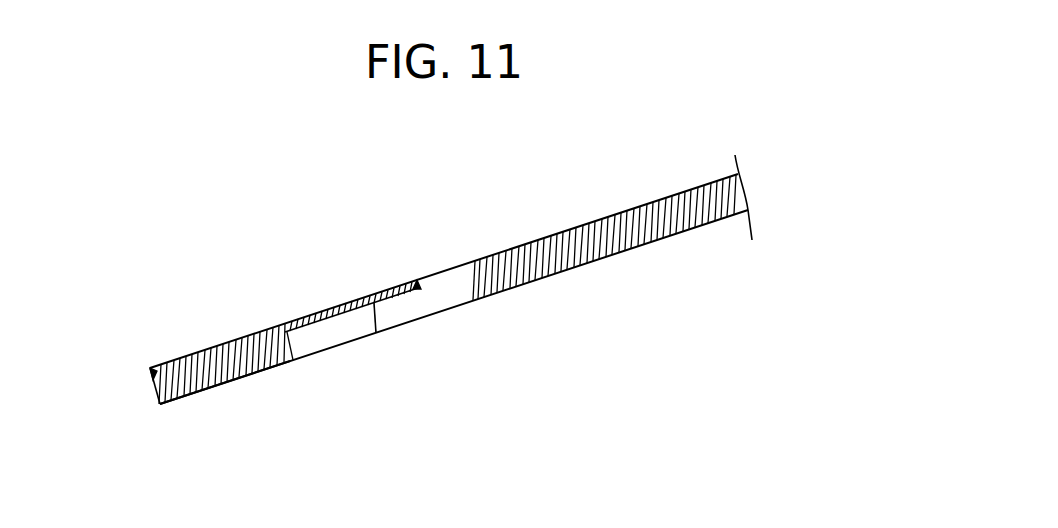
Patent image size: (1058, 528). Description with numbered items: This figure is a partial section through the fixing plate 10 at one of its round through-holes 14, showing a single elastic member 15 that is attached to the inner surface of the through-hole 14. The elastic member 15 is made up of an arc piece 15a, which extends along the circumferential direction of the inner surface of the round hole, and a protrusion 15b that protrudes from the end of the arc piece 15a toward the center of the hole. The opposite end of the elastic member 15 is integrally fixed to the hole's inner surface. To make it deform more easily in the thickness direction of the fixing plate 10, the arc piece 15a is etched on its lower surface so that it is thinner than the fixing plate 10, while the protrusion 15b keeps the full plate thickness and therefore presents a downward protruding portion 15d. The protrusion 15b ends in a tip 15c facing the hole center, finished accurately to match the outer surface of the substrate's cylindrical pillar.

The fixing plate 10 is at (642, 245).
The through-hole 14 is at (473, 286).
The elastic member 15 is at (312, 312).
The arc piece 15a is at (375, 335).
The protrusion 15b is at (203, 350).
The tip 15c is at (155, 387).
The downward protruding portion 15d is at (227, 385).